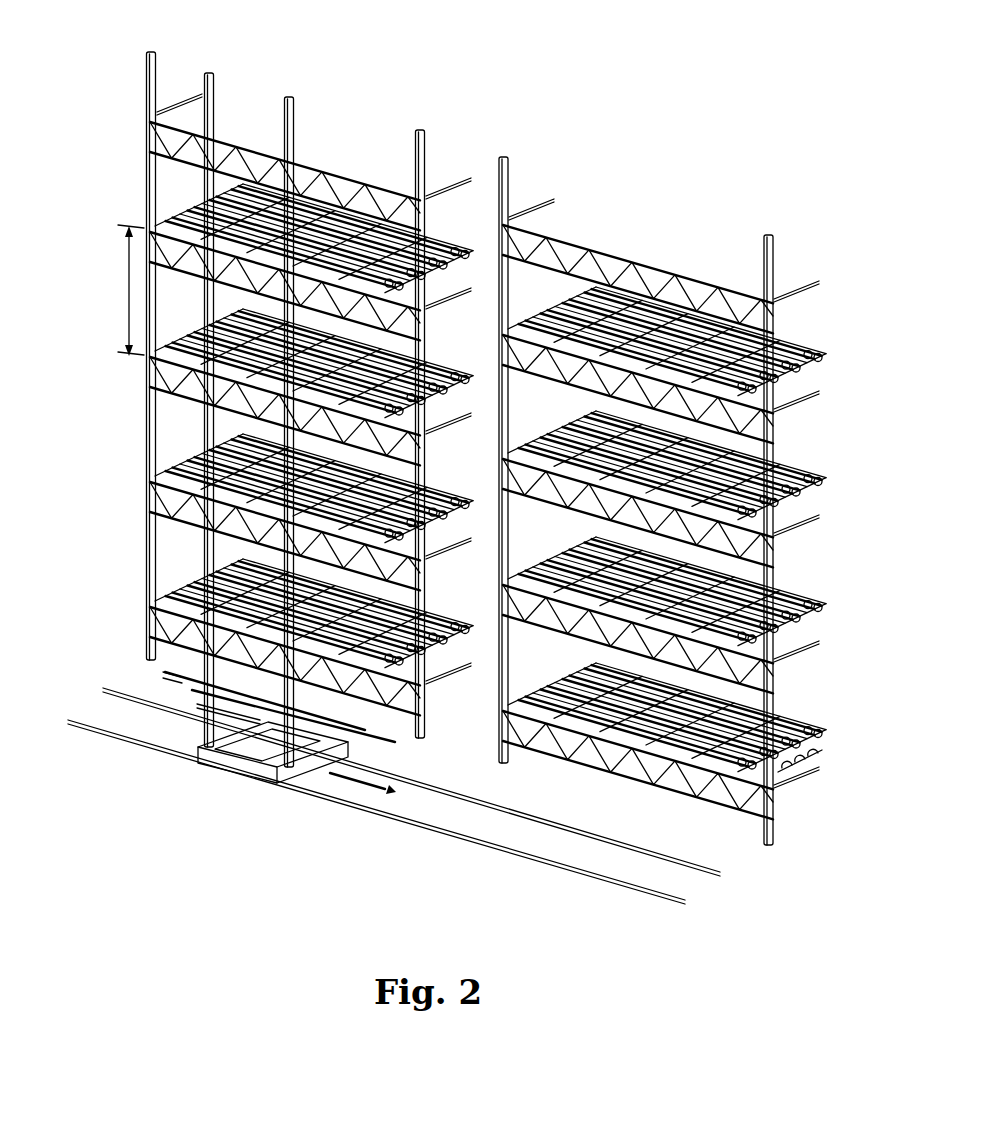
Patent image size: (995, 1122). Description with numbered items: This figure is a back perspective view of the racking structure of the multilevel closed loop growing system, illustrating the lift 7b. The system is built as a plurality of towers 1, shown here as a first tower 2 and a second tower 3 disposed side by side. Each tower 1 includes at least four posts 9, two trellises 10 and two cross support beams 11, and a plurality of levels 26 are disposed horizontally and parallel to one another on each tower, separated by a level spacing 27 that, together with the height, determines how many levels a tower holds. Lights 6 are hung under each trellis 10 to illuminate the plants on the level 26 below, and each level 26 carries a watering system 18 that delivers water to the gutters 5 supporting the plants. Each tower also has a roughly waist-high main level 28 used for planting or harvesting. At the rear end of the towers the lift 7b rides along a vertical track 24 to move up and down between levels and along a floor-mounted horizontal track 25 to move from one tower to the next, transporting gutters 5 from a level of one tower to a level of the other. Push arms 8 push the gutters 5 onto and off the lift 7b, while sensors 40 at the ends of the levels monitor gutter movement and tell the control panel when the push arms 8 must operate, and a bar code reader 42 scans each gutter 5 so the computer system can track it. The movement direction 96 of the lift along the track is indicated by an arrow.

The tower 1 is at (578, 68).
The first tower 2 is at (628, 176).
The second tower 3 is at (248, 105).
The gutter 5 is at (367, 731).
The light 6 is at (410, 208).
The lift 7b is at (247, 762).
The push arm 8 is at (203, 703).
The post 9 is at (768, 238).
The trellis 10 is at (575, 233).
The cross support beam 11 is at (798, 298).
The watering system 18 is at (805, 745).
The vertical track 24 is at (207, 566).
The horizontal track 25 is at (462, 802).
The level 26 is at (176, 183).
The level spacing 27 is at (128, 293).
The main level 28 is at (795, 588).
The sensor 40 is at (233, 641).
The bar code reader 42 is at (715, 800).
The direction of movement arrow 96 is at (258, 792).